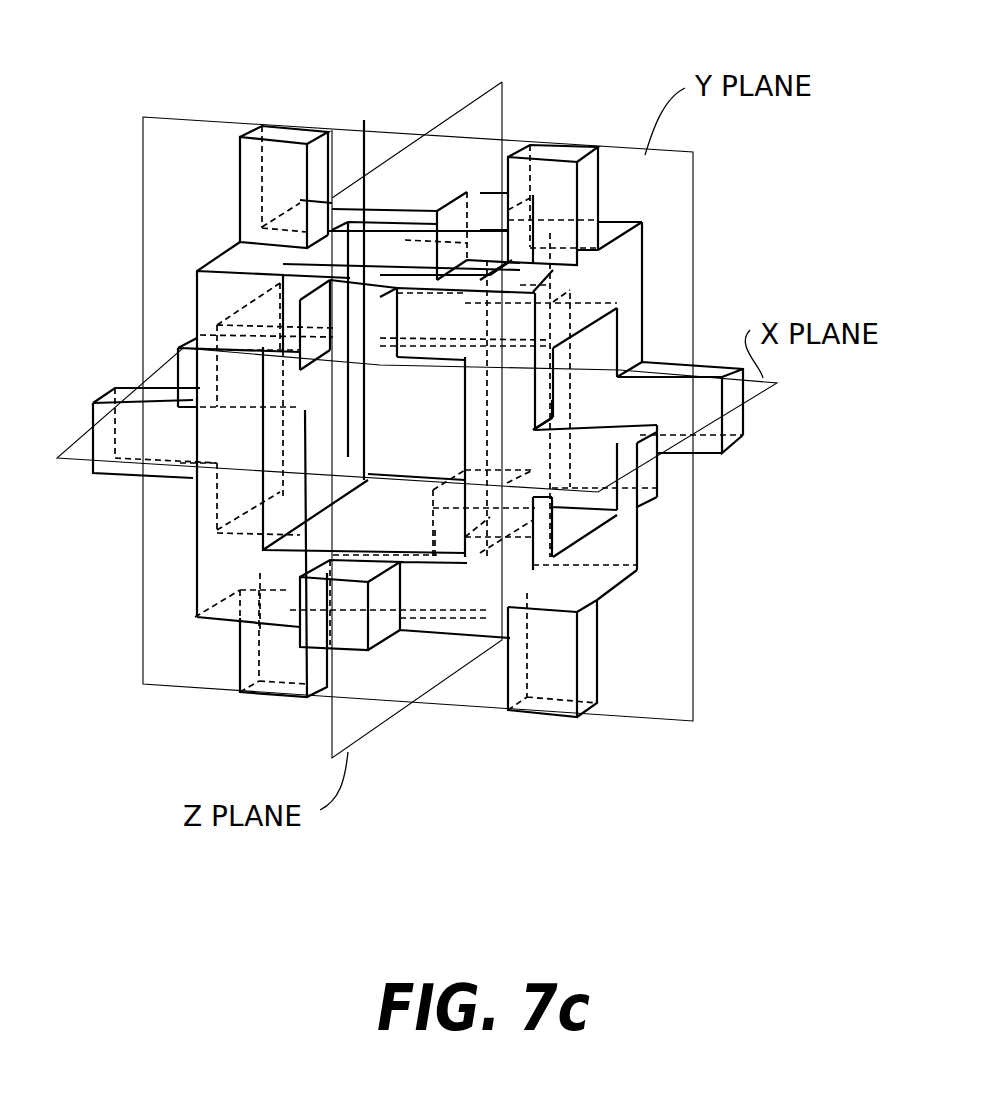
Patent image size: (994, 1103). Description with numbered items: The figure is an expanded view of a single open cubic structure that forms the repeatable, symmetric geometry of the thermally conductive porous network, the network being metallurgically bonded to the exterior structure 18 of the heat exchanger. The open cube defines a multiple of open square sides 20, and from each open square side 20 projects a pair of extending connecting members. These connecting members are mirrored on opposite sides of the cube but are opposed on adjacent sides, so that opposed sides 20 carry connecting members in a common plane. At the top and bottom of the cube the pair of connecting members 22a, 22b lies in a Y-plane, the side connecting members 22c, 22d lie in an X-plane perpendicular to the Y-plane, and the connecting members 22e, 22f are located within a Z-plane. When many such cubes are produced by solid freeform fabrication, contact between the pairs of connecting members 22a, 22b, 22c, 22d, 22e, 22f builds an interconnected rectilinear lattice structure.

The exterior structure 18 is at (643, 278).
The open square side 20 is at (247, 263).
The connecting member 22a is at (273, 132).
The connecting member 22b is at (553, 157).
The connecting member 22c is at (100, 452).
The connecting member 22d is at (177, 362).
The connecting member 22e is at (467, 190).
The connecting member 22f is at (355, 628).